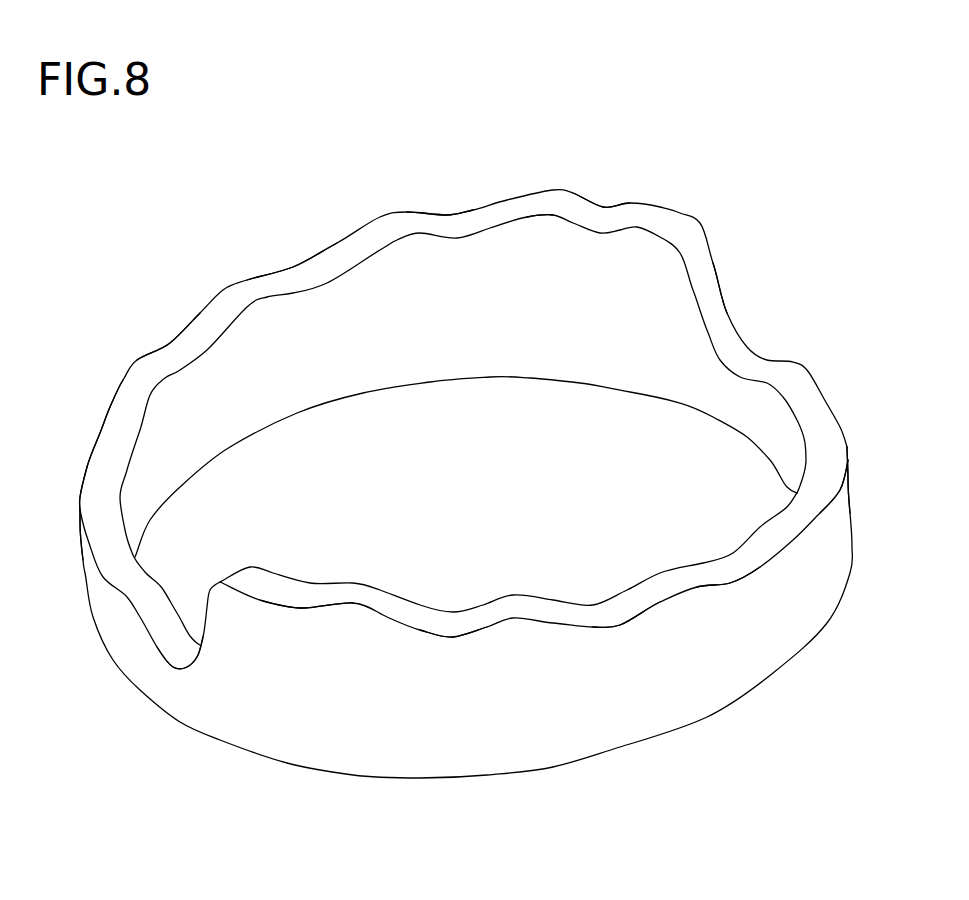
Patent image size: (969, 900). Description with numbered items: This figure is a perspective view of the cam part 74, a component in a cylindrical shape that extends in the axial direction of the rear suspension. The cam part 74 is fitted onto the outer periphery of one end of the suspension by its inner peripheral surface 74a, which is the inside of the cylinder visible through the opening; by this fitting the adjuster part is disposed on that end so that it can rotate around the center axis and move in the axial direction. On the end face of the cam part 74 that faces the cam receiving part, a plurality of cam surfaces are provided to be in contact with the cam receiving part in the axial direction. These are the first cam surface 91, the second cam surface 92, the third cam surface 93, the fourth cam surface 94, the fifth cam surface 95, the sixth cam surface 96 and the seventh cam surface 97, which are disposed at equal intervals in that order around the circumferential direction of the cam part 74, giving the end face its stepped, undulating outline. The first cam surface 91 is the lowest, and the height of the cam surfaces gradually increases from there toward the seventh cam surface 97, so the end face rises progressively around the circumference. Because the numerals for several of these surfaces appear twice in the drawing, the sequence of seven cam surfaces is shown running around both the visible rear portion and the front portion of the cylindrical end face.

The cam part 74 is at (503, 170).
The inner peripheral surface 74a is at (555, 273).
The first cam surface 91 is at (175, 648).
The second cam surface 92 is at (103, 540).
The third cam surface 93 is at (105, 457).
The fourth cam surface 94 is at (177, 353).
The fifth cam surface 95 is at (303, 277).
The sixth cam surface 96 is at (460, 223).
The seventh cam surface 97 is at (608, 220).